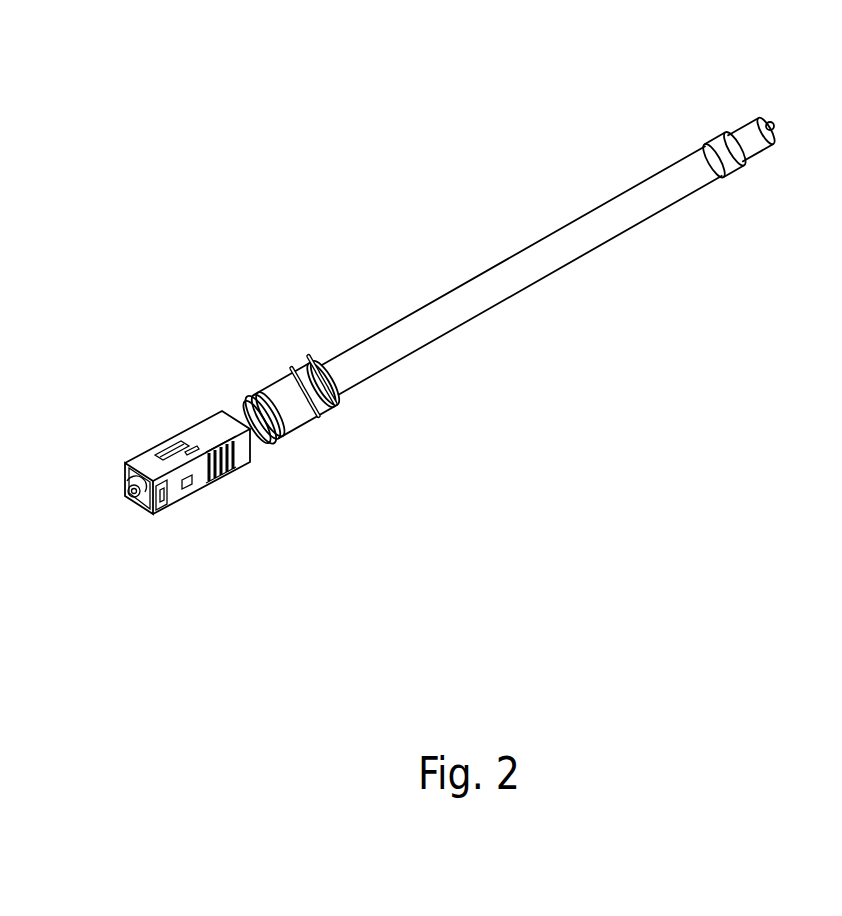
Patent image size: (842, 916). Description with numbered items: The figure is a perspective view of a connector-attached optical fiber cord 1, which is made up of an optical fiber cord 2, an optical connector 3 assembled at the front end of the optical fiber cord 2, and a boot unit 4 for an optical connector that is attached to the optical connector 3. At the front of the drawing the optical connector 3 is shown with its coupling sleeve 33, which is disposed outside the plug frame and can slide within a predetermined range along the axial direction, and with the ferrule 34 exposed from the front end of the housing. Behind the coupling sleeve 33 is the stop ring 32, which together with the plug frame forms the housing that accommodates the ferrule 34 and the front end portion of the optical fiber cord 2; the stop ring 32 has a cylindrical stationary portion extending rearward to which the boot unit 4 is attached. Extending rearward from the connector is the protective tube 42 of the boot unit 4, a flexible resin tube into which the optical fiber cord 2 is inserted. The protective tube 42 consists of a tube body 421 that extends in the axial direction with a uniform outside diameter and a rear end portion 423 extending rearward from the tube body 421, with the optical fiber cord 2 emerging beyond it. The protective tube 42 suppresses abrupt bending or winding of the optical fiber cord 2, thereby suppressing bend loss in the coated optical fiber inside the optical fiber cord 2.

The connector-attached optical fiber cord 1 is at (388, 126).
The optical fiber cord 2 is at (752, 133).
The optical connector 3 is at (156, 400).
The coupling sleeve 33 is at (204, 417).
The ferrule 34 is at (124, 487).
The stop ring 32 is at (256, 464).
The boot unit for an optical connector 4 is at (340, 439).
The protective tube 42 is at (293, 426).
The tube body 421 is at (545, 262).
The rear end portion 423 is at (727, 168).